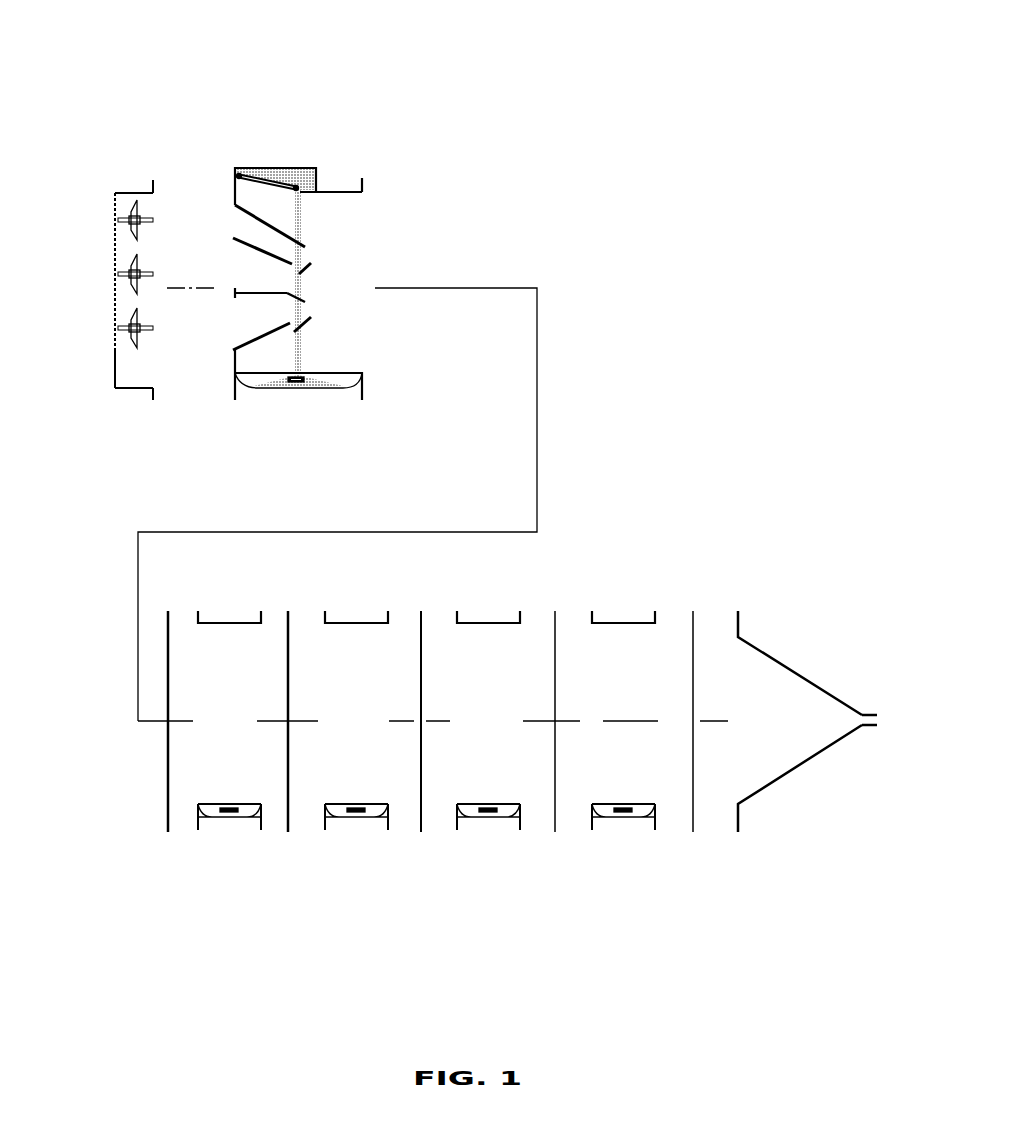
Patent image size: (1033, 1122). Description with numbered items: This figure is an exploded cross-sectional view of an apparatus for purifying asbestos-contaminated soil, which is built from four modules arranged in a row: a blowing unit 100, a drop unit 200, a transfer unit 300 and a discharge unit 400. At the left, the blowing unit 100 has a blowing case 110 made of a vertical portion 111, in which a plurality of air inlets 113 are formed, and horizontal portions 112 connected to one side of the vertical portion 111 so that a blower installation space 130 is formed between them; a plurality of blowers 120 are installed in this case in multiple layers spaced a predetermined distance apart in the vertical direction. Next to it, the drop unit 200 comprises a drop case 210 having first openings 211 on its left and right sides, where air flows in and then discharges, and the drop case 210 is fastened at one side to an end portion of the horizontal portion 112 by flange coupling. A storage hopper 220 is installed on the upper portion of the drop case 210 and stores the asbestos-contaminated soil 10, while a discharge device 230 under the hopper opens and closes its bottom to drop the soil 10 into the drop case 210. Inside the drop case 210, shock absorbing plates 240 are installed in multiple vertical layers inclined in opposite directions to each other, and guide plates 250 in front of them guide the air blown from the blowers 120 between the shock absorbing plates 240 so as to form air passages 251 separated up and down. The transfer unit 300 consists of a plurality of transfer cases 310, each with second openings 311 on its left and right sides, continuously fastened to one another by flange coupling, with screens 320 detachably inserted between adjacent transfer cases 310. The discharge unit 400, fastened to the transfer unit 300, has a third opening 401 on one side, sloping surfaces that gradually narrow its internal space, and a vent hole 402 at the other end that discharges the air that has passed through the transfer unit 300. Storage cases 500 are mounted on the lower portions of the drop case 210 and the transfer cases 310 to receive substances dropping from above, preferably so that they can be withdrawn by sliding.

The asbestos-contaminated soil 10 is at (282, 173).
The blowing unit 100 is at (145, 33).
The blowing case 110 is at (130, 481).
The vertical portion 111 is at (113, 375).
The horizontal portions 112 is at (120, 390).
The air inlets 113 is at (113, 305).
The blowers 120 is at (142, 330).
The blower installation space 130 is at (138, 365).
The drop unit 200 is at (303, 33).
The drop case 210 is at (340, 190).
The first openings 211 is at (233, 265).
The storage hopper 220 is at (322, 170).
The discharge device 230 is at (258, 178).
The shock absorbing plates 240 is at (300, 268).
The guide plates 250 is at (268, 289).
The air passages 251 is at (292, 292).
The transfer unit 300 is at (395, 970).
The transfer cases 310 is at (233, 623).
The second openings 311 is at (257, 742).
The screens 320 is at (287, 797).
The discharge unit 400 is at (795, 970).
The third opening 401 is at (743, 737).
The vent hole 402 is at (873, 727).
The storage cases 500 is at (227, 818).